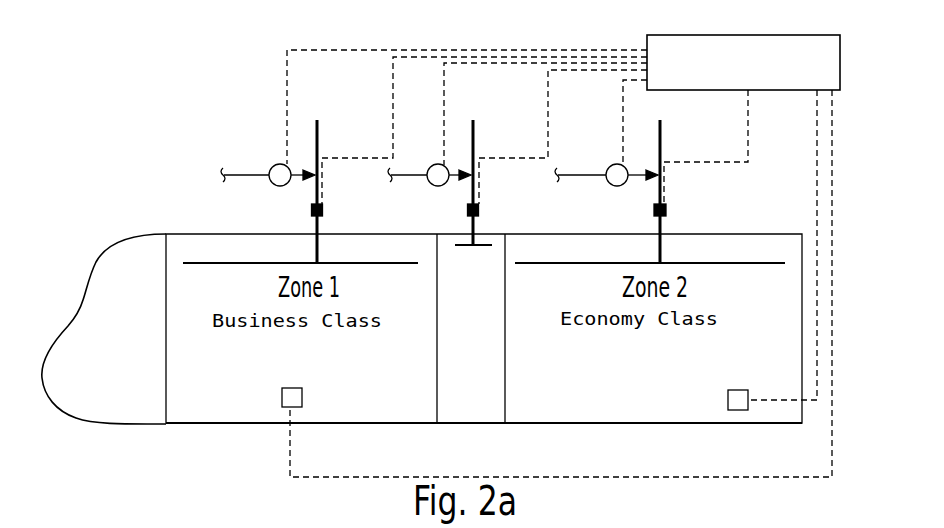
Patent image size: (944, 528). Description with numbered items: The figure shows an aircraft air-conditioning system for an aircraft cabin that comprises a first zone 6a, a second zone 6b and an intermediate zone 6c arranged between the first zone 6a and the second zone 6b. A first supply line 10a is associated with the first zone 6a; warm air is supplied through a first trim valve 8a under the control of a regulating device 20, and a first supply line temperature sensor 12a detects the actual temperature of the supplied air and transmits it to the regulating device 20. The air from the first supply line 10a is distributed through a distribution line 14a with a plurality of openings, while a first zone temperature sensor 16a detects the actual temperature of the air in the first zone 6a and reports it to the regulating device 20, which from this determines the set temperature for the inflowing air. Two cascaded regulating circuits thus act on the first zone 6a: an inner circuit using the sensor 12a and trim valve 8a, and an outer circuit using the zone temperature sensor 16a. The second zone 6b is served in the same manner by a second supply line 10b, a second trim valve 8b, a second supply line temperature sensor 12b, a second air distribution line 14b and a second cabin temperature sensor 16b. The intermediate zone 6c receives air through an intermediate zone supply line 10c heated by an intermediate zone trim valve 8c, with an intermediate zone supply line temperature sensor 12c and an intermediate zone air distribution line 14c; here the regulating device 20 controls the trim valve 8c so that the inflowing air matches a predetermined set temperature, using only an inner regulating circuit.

The first zone 6a is at (243, 424).
The second zone 6b is at (562, 415).
The intermediate zone 6c is at (477, 415).
The first trim valve 8a is at (281, 163).
The second trim valve 8b is at (620, 163).
The intermediate zone trim valve 8c is at (440, 163).
The first supply line 10a is at (319, 129).
The second supply line 10b is at (662, 129).
The intermediate zone supply line 10c is at (475, 129).
The first supply line temperature sensor 12a is at (323, 210).
The second supply line temperature sensor 12b is at (666, 210).
The intermediate zone supply line temperature sensor 12c is at (467, 210).
The distribution line 14a is at (195, 262).
The second air distribution line 14b is at (555, 262).
The intermediate zone air distribution line 14c is at (485, 244).
The first zone temperature sensor 16a is at (302, 397).
The second cabin temperature sensor 16b is at (738, 390).
The regulating device 20 is at (765, 92).